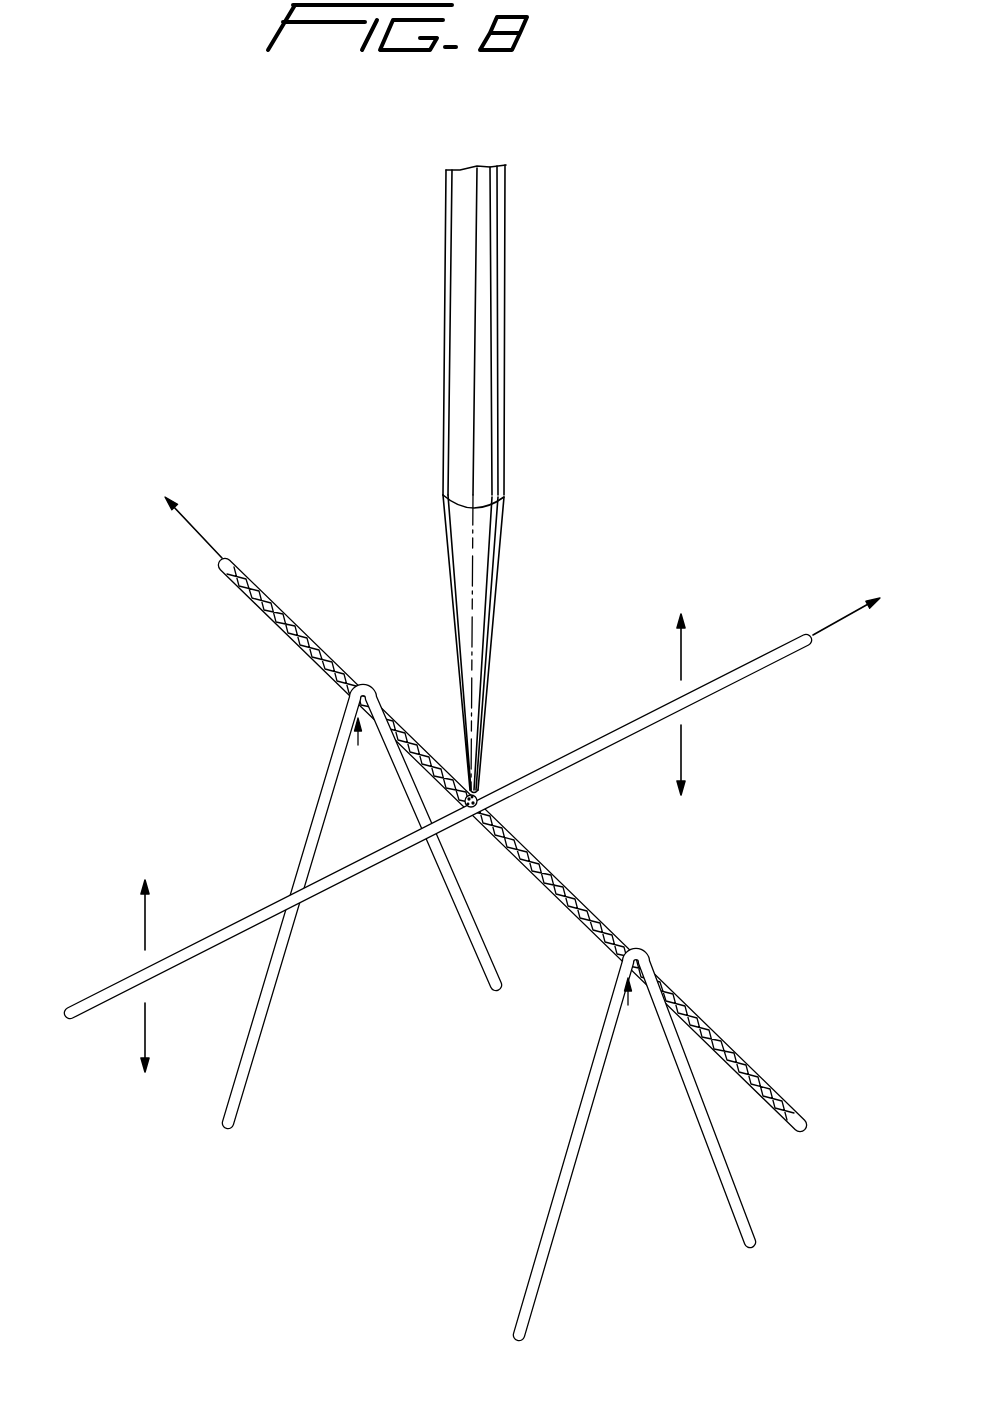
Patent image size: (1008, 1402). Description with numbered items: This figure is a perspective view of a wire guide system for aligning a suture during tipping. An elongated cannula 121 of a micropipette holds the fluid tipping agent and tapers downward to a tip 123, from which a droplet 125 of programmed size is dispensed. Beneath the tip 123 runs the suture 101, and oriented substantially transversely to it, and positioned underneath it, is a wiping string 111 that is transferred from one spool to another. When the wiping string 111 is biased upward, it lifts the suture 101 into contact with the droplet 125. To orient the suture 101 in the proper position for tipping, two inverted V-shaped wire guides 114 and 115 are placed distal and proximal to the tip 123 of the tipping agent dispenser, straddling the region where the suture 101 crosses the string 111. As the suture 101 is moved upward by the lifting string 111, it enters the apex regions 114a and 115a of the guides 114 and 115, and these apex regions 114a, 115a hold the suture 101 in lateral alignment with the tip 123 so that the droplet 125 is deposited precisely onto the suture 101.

The suture 101 is at (735, 1052).
The wiping string 111 is at (718, 688).
The inverted V-shaped guide 114 is at (260, 1025).
The apex region 114a is at (358, 750).
The inverted V-shaped guide 115 is at (565, 1192).
The apex region 115a is at (612, 1028).
The elongated cannula 121 is at (497, 310).
The tip 123 is at (488, 568).
The droplet 125 is at (486, 790).